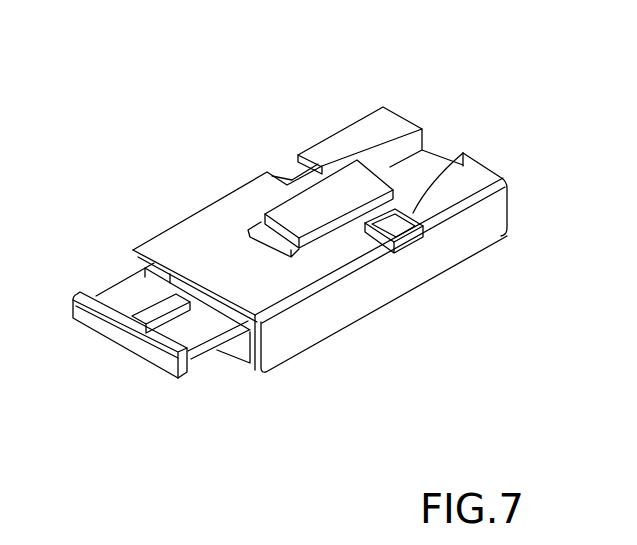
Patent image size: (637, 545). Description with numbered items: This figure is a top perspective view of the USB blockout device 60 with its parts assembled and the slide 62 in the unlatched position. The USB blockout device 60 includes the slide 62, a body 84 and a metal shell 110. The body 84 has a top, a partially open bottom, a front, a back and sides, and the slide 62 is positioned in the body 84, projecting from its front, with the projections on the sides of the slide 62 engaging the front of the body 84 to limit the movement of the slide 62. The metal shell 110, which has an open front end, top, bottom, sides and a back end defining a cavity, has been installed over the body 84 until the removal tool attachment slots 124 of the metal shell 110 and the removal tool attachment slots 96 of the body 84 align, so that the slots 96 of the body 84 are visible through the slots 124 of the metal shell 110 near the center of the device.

The USB blockout device 60 is at (175, 108).
The slide 62 is at (107, 337).
The body 84 is at (143, 266).
The removal tool attachment slots 96 is at (388, 241).
The metal shell 110 is at (327, 312).
The removal tool attachment slots 124 is at (408, 215).